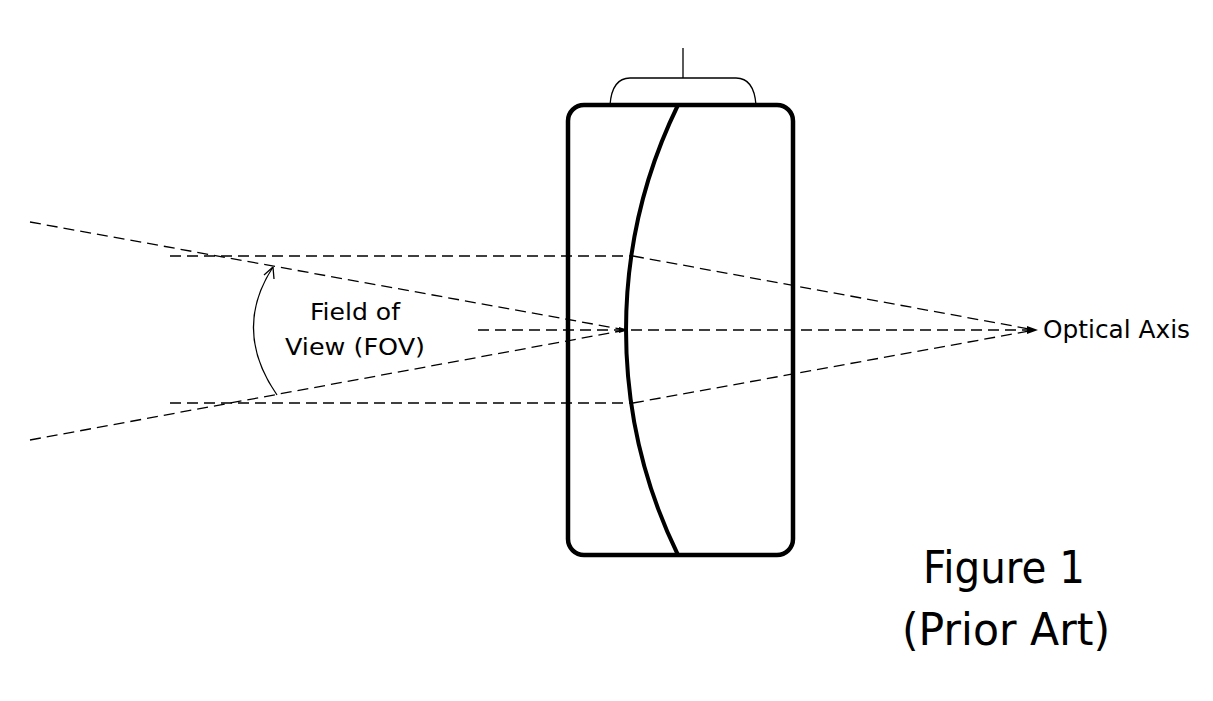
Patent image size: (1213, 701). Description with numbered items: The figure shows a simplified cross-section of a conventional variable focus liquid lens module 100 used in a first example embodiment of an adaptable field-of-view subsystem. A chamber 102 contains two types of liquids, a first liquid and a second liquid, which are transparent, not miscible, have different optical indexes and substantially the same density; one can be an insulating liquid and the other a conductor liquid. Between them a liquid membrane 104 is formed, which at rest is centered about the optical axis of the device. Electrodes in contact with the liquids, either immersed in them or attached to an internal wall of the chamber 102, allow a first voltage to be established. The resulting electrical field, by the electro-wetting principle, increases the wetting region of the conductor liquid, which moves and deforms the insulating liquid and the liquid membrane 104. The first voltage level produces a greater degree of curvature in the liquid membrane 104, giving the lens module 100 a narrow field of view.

The variable focus liquid lens module 100 is at (609, 319).
The chamber 102 is at (725, 330).
The liquid membrane 104 is at (606, 349).